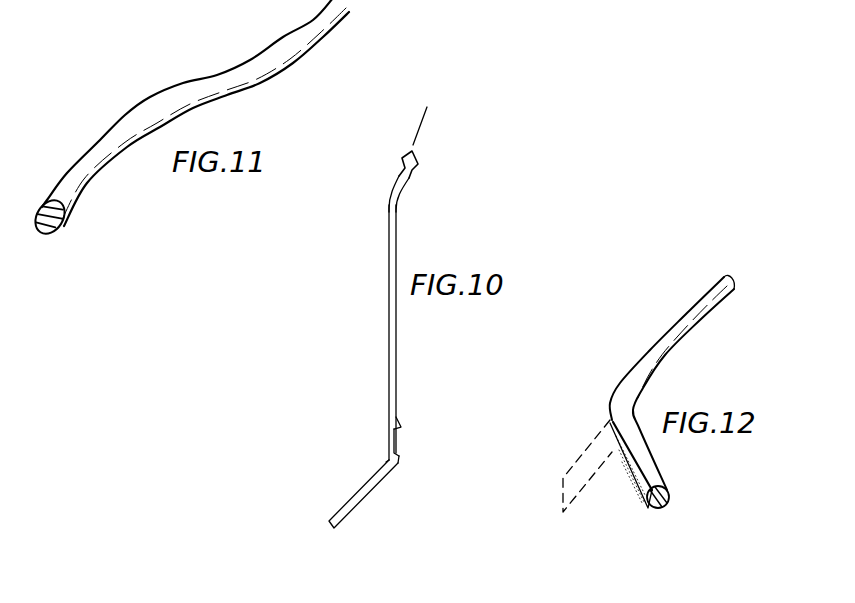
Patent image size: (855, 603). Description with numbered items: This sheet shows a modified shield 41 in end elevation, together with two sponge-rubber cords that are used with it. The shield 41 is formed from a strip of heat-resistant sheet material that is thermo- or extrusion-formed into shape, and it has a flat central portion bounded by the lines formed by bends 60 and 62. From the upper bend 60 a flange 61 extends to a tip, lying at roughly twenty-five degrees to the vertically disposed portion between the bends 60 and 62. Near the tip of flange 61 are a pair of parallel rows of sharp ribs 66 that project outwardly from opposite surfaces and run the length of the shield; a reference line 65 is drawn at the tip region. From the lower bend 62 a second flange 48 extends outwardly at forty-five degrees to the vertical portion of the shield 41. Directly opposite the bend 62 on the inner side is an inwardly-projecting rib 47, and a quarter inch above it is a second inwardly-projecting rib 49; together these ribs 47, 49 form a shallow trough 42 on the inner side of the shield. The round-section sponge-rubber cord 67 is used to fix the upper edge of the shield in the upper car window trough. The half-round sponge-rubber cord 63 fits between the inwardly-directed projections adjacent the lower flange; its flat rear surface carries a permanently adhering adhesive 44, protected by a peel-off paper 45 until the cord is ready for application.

In FIG. 10, the modified shield 41 is at (385, 295).
In FIG. 10, the shallow trough 42 is at (401, 442).
In FIG. 12, the adhesive 44 is at (630, 477).
In FIG. 12, the peel-off paper 45 is at (592, 447).
In FIG. 10, the inwardly-projecting rib 47 is at (398, 463).
In FIG. 10, the second flange 48 is at (358, 502).
In FIG. 10, the inwardly-projecting rib 49 is at (401, 423).
In FIG. 10, the bend 60 is at (388, 210).
In FIG. 10, the flange 61 is at (402, 197).
In FIG. 10, the bend 62 is at (387, 460).
In FIG. 12, the half-round sponge-rubber cord 63 is at (667, 493).
In FIG. 10, the axis line 65 is at (423, 122).
In FIG. 10, the sharp ribs 66 is at (400, 176).
In FIG. 11, the sponge-rubber cord 67 is at (82, 197).